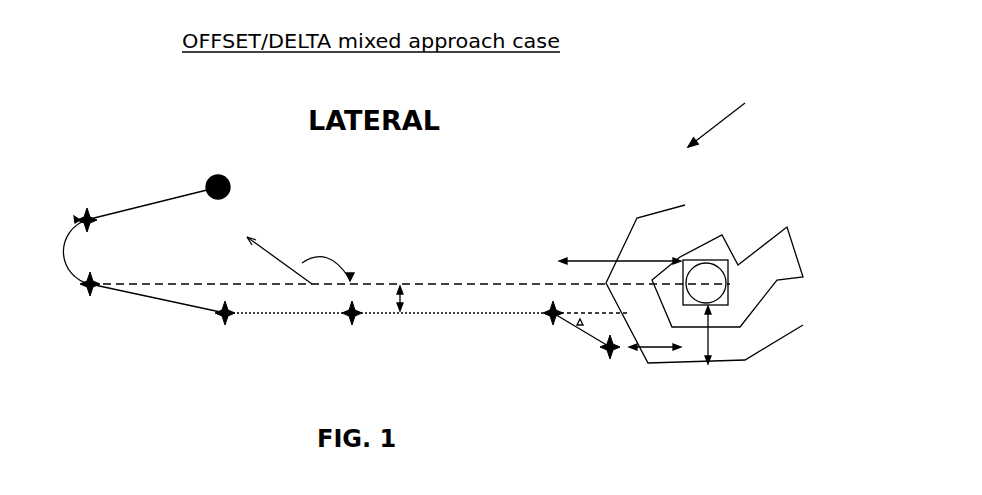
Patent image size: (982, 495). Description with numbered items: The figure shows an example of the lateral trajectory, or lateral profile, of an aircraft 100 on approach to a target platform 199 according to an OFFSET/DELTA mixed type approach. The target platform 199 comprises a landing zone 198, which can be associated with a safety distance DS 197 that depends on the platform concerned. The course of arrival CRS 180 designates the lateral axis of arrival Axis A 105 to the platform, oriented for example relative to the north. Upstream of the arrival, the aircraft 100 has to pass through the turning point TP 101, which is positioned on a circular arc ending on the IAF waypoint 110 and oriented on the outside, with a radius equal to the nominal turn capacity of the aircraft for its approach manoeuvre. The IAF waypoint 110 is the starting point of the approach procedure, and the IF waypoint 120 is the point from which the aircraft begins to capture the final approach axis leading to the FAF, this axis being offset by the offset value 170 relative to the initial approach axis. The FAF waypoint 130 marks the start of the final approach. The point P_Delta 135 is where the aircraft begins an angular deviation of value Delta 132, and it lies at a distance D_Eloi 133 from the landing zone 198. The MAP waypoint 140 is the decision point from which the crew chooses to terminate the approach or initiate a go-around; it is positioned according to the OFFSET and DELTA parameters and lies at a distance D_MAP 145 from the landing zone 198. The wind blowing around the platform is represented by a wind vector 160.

The aircraft 100 is at (230, 179).
The turning point TP 101 is at (102, 180).
The lateral axis of arrival Axis A 105 is at (140, 270).
The IAF waypoint 110 is at (142, 338).
The IF waypoint 120 is at (257, 357).
The FAF waypoint 130 is at (425, 360).
The angular deviation Delta 132 is at (585, 309).
The distance D_Eloi 133 is at (600, 255).
The point P_Delta 135 is at (490, 345).
The MAP waypoint 140 is at (600, 378).
The distance D_MAP 145 is at (658, 352).
The wind vector 160 is at (765, 142).
The offset value 170 is at (438, 283).
The course of arrival CRS 180 is at (347, 227).
The safety distance DS 197 is at (755, 327).
The landing zone 198 is at (730, 283).
The target platform 199 is at (732, 235).